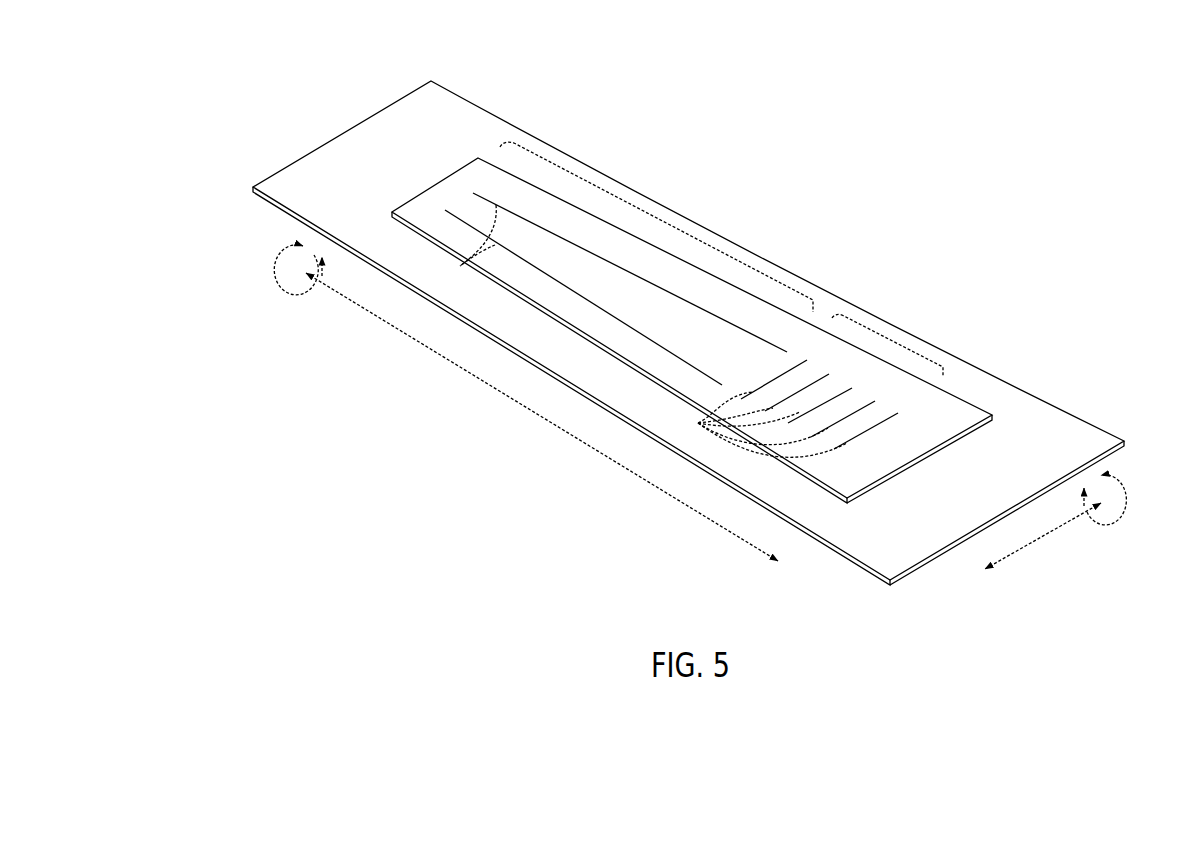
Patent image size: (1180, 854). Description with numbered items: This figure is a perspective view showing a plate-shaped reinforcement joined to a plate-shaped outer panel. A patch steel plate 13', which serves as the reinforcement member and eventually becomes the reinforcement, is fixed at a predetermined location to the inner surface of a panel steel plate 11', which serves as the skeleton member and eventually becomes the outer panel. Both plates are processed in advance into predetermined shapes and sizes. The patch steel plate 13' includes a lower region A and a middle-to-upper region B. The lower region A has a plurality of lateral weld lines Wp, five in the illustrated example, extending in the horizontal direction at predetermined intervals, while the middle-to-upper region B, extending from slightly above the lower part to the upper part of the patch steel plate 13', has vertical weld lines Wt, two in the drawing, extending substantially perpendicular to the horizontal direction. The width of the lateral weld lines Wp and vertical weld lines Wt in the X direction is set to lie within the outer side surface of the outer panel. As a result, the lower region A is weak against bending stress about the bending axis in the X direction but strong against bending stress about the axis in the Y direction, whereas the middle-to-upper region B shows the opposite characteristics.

The panel steel plate 11' is at (688, 327).
The patch steel plate 13' is at (692, 330).
The lower region A is at (890, 338).
The middle-to-upper region B is at (685, 236).
The vertical weld lines Wt is at (467, 253).
The lateral weld lines Wp is at (752, 424).
The X direction X is at (1043, 536).
The Y direction Y is at (542, 417).